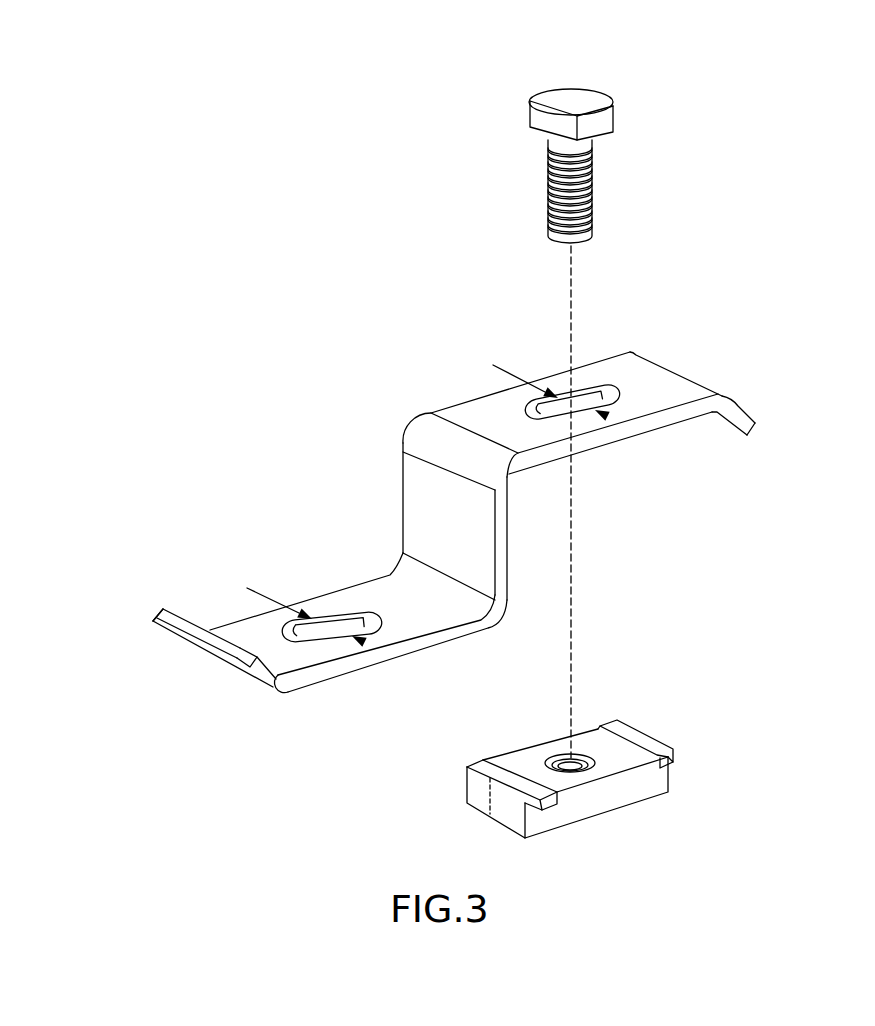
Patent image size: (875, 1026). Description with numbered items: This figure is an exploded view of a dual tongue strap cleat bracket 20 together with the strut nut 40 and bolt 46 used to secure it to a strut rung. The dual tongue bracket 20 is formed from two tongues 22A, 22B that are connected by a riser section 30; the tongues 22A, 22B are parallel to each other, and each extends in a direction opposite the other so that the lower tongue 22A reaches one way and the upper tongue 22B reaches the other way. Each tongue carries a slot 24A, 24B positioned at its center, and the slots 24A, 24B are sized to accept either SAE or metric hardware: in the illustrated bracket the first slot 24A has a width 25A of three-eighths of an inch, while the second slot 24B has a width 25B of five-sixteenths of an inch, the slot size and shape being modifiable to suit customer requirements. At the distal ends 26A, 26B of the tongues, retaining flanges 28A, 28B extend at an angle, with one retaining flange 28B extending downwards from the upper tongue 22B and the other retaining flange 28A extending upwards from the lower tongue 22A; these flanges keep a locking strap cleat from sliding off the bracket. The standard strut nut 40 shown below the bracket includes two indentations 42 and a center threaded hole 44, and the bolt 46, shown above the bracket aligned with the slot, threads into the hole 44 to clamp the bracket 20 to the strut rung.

The dual tongue bracket 20 is at (292, 222).
The lower tongue 22A is at (242, 632).
The upper tongue 22B is at (488, 405).
The first slot 24A is at (386, 626).
The second slot 24B is at (616, 394).
The width of first slot 25A is at (364, 642).
The width of second slot 25B is at (607, 416).
The distal end of lower tongue 26A is at (278, 688).
The distal end of upper tongue 26B is at (697, 378).
The retaining flange 28A is at (193, 645).
The retaining flange 28B is at (745, 416).
The riser section 30 is at (452, 513).
The strut nut 40 is at (585, 742).
The indentations 42 is at (650, 752).
The center threaded hole 44 is at (588, 752).
The bolt 46 is at (572, 99).